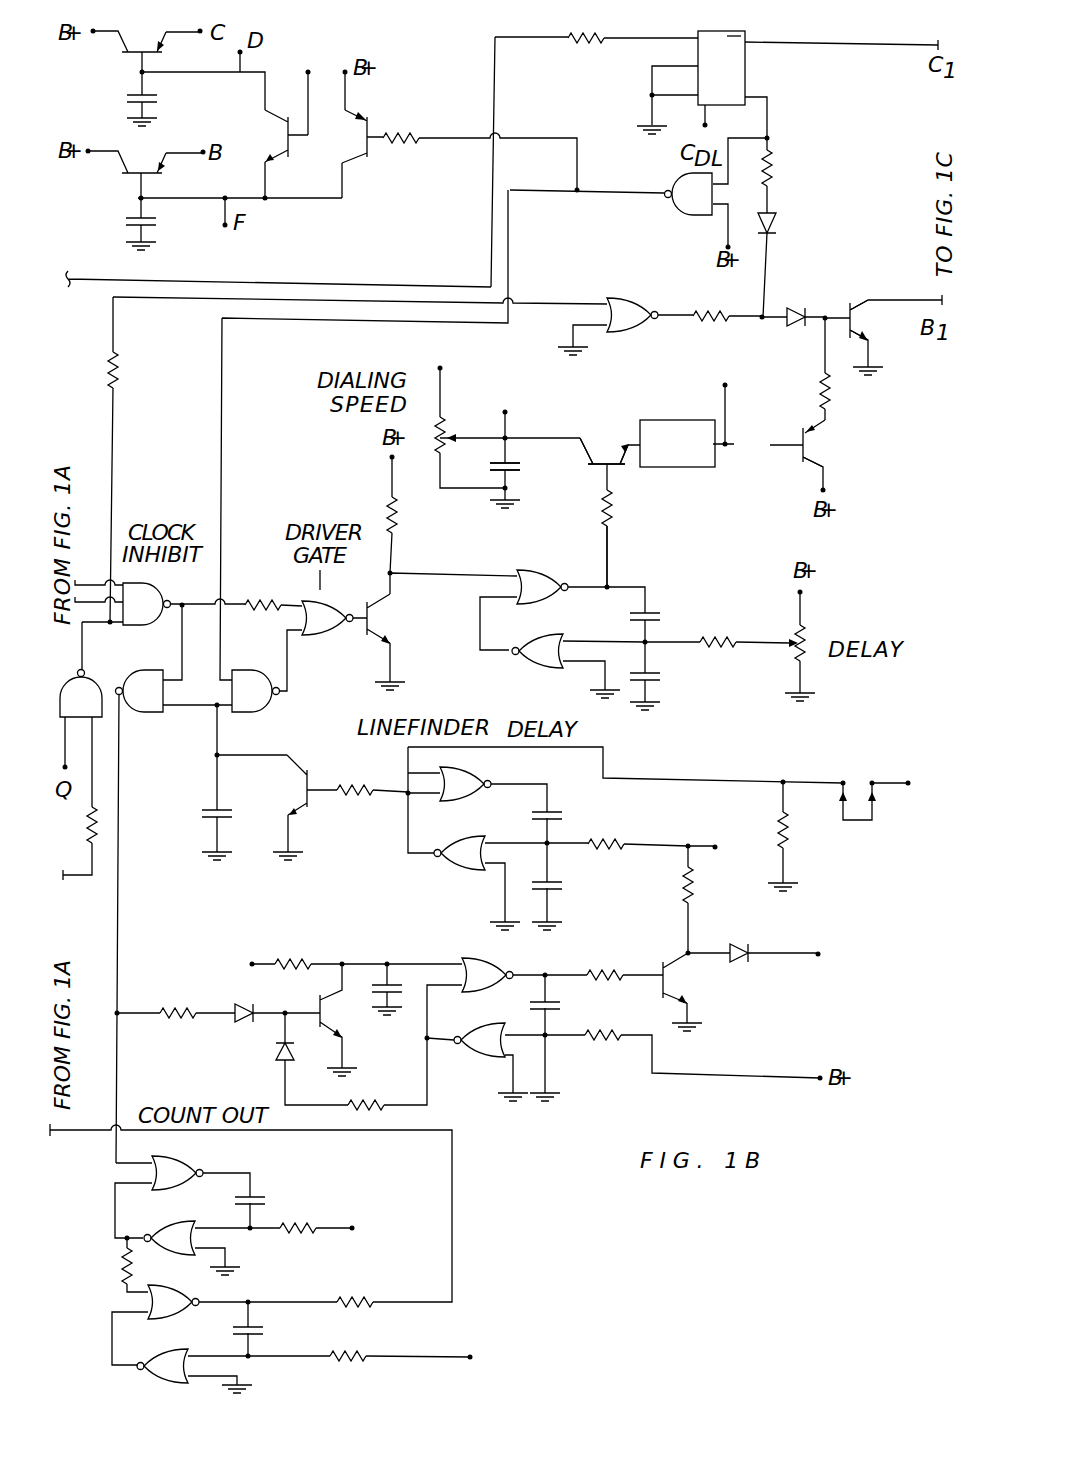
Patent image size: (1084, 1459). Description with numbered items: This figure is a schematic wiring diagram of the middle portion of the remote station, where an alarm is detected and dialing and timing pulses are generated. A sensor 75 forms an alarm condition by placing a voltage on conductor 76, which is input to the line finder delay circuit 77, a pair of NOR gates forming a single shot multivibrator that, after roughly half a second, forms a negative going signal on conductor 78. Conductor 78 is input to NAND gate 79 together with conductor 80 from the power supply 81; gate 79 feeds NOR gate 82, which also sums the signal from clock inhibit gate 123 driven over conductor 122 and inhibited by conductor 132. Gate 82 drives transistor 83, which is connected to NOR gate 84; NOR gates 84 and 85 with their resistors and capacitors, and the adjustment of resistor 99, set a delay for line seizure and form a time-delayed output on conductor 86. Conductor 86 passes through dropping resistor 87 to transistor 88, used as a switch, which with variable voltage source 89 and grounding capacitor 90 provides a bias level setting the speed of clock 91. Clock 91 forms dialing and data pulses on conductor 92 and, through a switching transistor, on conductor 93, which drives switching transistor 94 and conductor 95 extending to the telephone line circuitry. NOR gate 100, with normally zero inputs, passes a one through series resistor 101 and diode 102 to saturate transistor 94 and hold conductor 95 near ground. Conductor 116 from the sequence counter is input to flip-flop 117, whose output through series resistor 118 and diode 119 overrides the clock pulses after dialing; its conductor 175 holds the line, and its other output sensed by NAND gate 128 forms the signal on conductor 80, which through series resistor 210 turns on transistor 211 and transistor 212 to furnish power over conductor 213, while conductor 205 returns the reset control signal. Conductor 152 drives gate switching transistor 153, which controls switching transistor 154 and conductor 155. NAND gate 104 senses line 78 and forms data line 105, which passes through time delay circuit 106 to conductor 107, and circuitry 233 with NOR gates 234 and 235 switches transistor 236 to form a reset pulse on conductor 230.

The switching transistor 154 is at (118, 42).
The conductor 155 is at (176, 34).
The conductor 213 is at (178, 147).
The transistor 212 is at (128, 176).
The conductor 116 is at (183, 278).
The power supply 81 is at (312, 217).
The gate switching transistor 153 is at (299, 146).
The conductor 152 is at (310, 92).
The transistor 211 is at (370, 143).
The series resistor 210 is at (408, 127).
The flip-flop 117 is at (748, 75).
The conductor 175 is at (847, 50).
The conductor 205 is at (708, 115).
The NAND gate 128 is at (675, 183).
The series resistor 118 is at (772, 165).
The diode 119 is at (775, 218).
The NOR gate 100 is at (623, 290).
The series resistor 101 is at (718, 305).
The diode 102 is at (808, 290).
The conductor 95 is at (900, 290).
The switching transistor 94 is at (852, 322).
The conductor 93 is at (825, 357).
The conductor 92 is at (727, 407).
The clock 91 is at (702, 467).
The transistor 88 is at (594, 443).
The dropping resistor 87 is at (614, 510).
The variable voltage source 89 is at (442, 420).
The grounding capacitor 90 is at (515, 473).
The conductor 80 is at (223, 443).
The conductor 122 is at (93, 583).
The clock inhibit gate 123 is at (158, 588).
The conductor 132 is at (95, 610).
The NAND gate 104 is at (143, 712).
The data line 105 is at (120, 792).
The NAND gate 79 is at (270, 705).
The conductor 78 is at (220, 743).
The NOR gate 82 is at (323, 637).
The transistor 83 is at (375, 610).
The NOR gate 84 is at (543, 570).
The NOR gate 85 is at (552, 632).
The conductor 86 is at (609, 552).
The resistor 99 is at (805, 627).
The line finder delay circuit 77 is at (632, 765).
The conductor 76 is at (819, 780).
The sensor 75 is at (878, 815).
The reset circuitry 233 is at (267, 927).
The NOR gate 234 is at (482, 992).
The NOR gate 235 is at (467, 1058).
The transistor 236 is at (682, 983).
The conductor 230 is at (795, 953).
The time delay circuit 106 is at (303, 1187).
The conductor 107 is at (455, 1148).